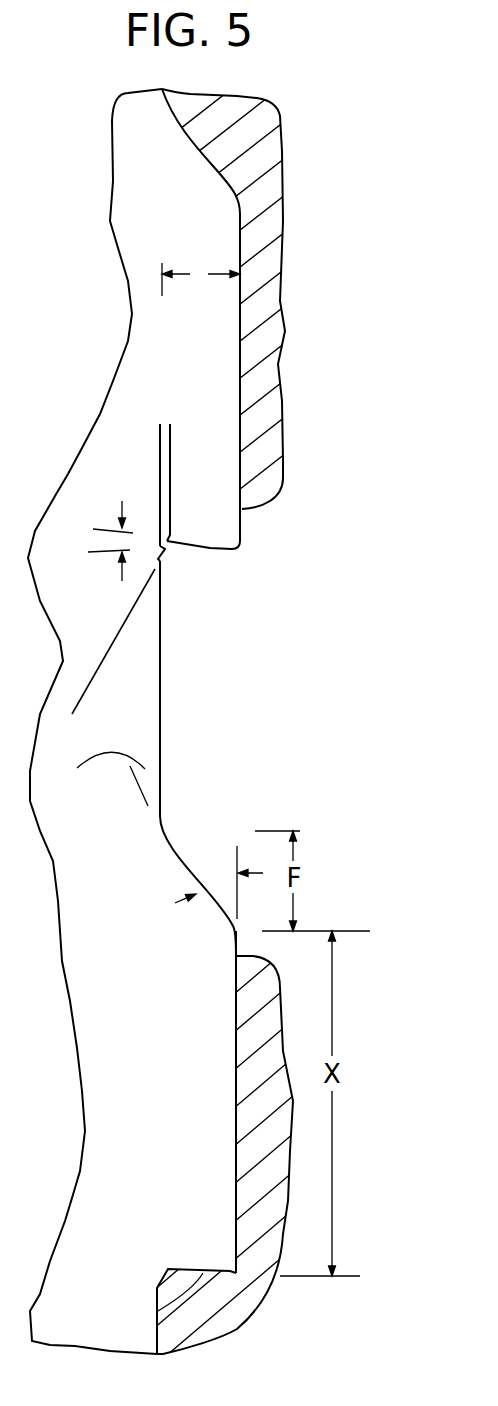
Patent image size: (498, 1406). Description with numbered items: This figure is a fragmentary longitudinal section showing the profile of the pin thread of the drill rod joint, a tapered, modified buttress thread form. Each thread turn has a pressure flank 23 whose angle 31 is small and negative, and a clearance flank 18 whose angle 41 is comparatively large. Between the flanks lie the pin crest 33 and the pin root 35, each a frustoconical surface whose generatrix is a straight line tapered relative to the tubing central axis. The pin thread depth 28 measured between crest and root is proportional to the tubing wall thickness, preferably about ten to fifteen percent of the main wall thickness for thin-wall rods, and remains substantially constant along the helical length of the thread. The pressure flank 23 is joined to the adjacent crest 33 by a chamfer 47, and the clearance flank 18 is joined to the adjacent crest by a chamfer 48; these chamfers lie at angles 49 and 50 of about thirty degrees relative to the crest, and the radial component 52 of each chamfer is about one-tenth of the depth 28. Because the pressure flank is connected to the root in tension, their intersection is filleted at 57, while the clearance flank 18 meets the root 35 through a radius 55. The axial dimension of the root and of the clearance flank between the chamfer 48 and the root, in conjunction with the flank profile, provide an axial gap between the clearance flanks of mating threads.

The clearance flank 18 is at (220, 177).
The pressure flank 23 is at (207, 548).
The pin thread depth 28 is at (200, 275).
The pressure flank angle 31 is at (107, 536).
The pin thread crest 33 is at (161, 740).
The pin thread root 35 is at (235, 1087).
The clearance flank angle 41 is at (219, 882).
The chamfer 47 is at (165, 549).
The chamfer 48 is at (162, 840).
The chamfer angle 49 is at (149, 720).
The chamfer angle 50 is at (125, 784).
The radial component 52 is at (208, 477).
The radius 55 is at (218, 926).
The fillet 57 is at (217, 1266).